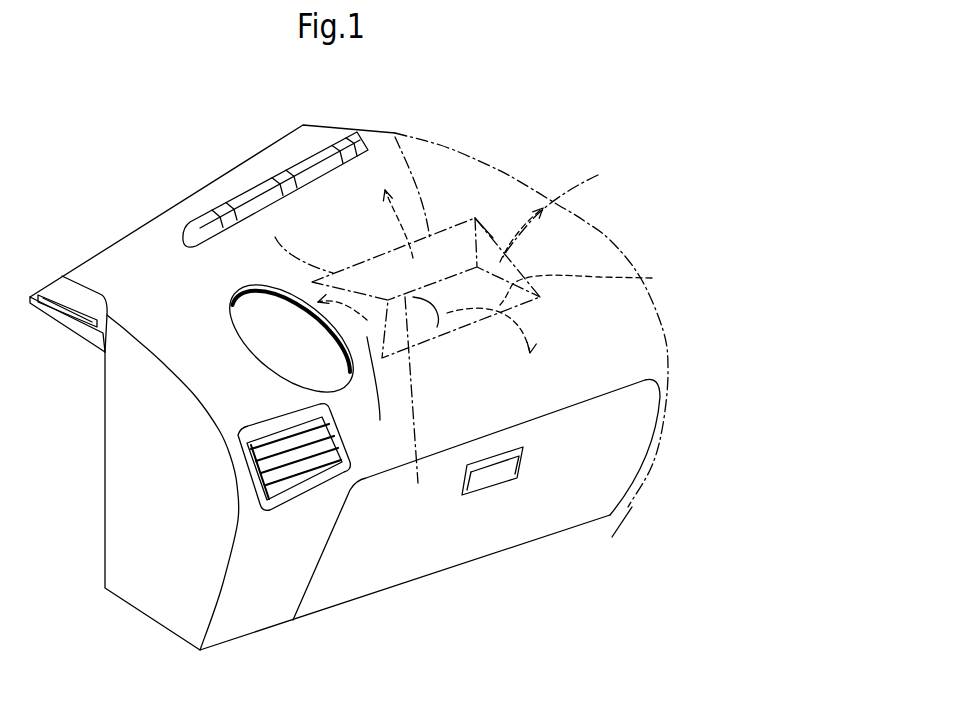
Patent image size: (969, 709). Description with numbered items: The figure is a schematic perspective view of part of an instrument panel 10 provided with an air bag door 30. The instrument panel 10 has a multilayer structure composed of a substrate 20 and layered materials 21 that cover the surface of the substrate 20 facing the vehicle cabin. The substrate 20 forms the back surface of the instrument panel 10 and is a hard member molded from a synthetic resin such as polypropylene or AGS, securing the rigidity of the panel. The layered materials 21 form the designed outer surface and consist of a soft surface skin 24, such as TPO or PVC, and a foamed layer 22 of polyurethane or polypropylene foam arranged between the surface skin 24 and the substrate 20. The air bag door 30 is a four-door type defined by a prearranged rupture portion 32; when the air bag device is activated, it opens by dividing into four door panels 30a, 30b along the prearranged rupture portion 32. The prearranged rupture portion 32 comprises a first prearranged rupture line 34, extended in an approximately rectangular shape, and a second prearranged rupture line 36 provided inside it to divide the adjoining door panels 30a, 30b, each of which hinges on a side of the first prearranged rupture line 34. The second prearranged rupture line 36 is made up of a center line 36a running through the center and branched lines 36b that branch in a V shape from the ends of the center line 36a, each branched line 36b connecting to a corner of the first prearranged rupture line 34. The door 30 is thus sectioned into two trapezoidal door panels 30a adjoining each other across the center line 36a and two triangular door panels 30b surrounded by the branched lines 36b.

The instrument panel 10 is at (428, 168).
The substrate 20 is at (286, 343).
The layered materials 21 is at (208, 123).
The foamed layer 22 is at (237, 287).
The surface skin 24 is at (243, 270).
The air bag door 30 is at (461, 250).
The trapezoidal door panel 30a is at (390, 272).
The triangular door panel 30b is at (505, 279).
The prearranged rupture portion 32 is at (489, 222).
The first prearranged rupture line 34 is at (395, 137).
The second prearranged rupture line 36 is at (491, 342).
The center line 36a is at (447, 333).
The branched line 36b is at (675, 279).